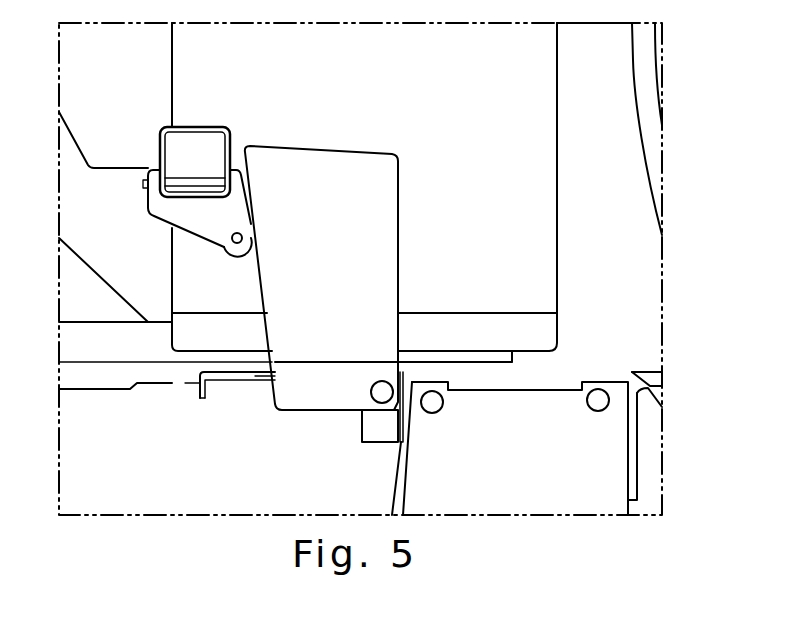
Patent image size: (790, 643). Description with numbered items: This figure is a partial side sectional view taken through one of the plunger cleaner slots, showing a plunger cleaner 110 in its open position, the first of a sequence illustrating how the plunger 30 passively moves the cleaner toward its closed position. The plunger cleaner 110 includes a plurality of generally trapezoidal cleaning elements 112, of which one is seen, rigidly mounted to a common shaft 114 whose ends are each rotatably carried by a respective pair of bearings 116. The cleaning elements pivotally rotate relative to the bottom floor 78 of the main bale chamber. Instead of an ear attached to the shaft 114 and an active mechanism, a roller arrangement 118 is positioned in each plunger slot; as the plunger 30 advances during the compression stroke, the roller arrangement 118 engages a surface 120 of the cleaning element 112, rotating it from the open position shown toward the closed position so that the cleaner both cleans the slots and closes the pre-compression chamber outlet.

The plunger 30 is at (557, 172).
The bottom floor 78 is at (185, 383).
The plunger cleaner 110 is at (301, 311).
The cleaning element 112 is at (400, 280).
The shaft 114 is at (378, 398).
The bearings 116 is at (375, 442).
The roller arrangement 118 is at (225, 254).
The surface 120 is at (256, 278).